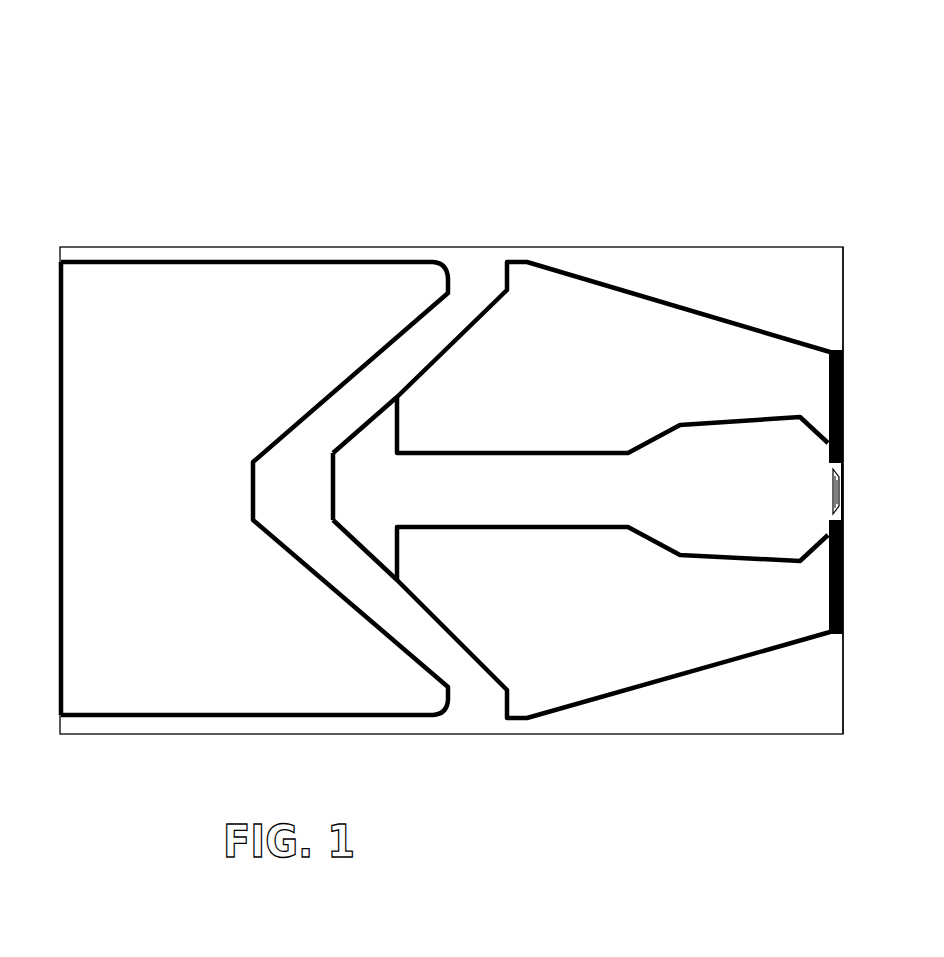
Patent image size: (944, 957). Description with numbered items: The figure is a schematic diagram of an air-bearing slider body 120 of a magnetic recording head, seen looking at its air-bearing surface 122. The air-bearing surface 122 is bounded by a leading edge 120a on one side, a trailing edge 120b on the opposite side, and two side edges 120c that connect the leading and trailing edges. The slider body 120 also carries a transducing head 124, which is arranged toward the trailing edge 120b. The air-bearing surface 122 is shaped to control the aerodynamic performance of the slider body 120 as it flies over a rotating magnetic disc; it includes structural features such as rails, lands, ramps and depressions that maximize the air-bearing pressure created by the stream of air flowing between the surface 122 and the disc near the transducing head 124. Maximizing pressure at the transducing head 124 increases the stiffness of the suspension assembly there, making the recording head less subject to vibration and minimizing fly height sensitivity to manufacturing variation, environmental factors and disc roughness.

The air-bearing slider body 120 is at (469, 163).
The leading edge 120a is at (57, 276).
The trailing edge 120b is at (842, 277).
The side edges 120c is at (267, 247).
The air-bearing surface 122 is at (600, 275).
The transducing head 124 is at (826, 487).